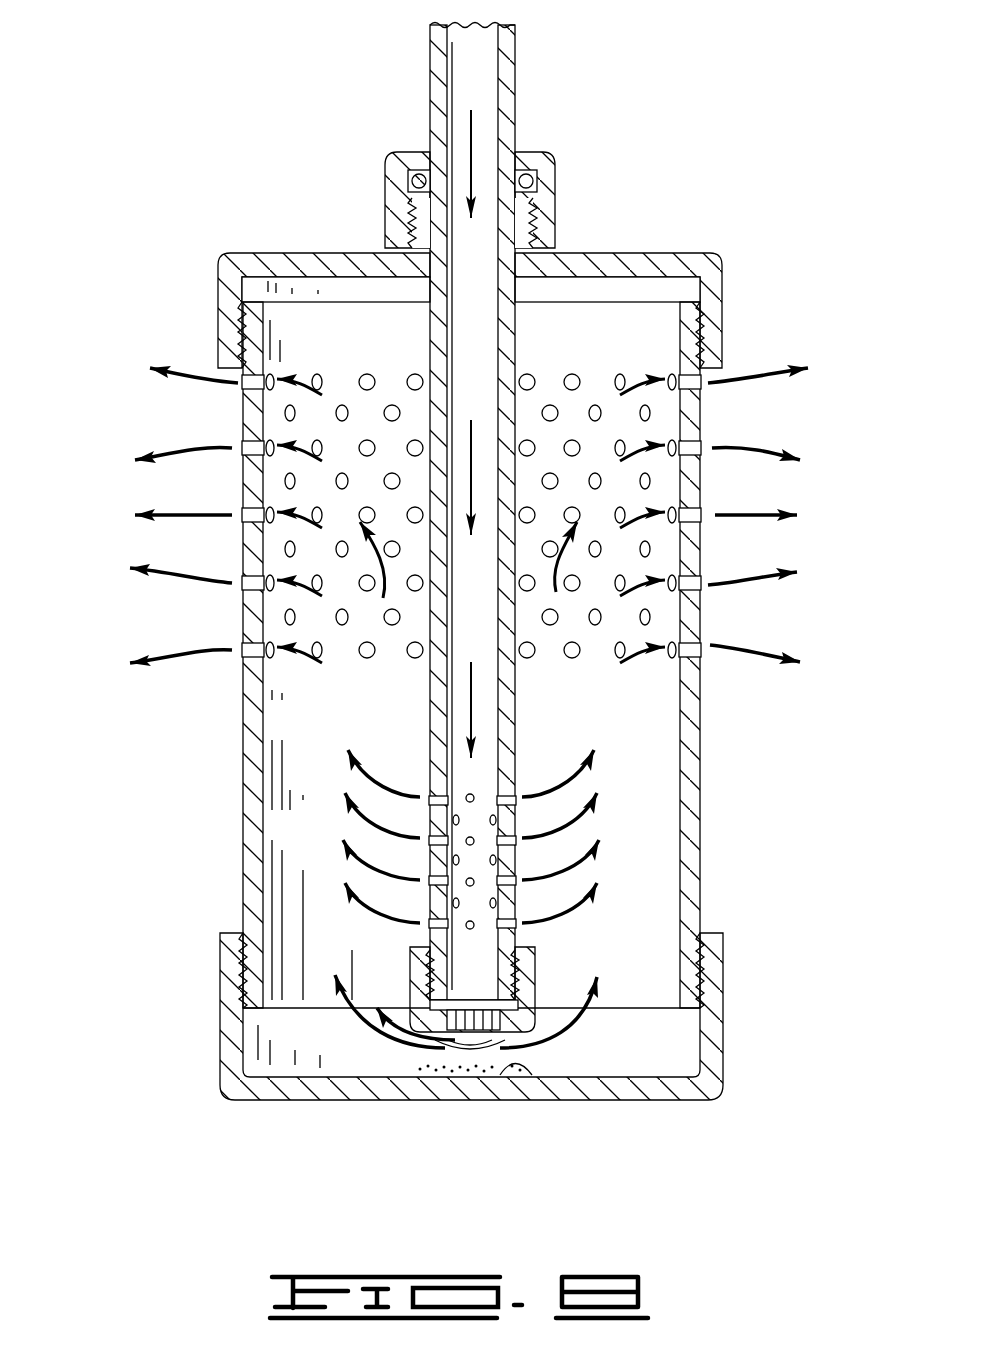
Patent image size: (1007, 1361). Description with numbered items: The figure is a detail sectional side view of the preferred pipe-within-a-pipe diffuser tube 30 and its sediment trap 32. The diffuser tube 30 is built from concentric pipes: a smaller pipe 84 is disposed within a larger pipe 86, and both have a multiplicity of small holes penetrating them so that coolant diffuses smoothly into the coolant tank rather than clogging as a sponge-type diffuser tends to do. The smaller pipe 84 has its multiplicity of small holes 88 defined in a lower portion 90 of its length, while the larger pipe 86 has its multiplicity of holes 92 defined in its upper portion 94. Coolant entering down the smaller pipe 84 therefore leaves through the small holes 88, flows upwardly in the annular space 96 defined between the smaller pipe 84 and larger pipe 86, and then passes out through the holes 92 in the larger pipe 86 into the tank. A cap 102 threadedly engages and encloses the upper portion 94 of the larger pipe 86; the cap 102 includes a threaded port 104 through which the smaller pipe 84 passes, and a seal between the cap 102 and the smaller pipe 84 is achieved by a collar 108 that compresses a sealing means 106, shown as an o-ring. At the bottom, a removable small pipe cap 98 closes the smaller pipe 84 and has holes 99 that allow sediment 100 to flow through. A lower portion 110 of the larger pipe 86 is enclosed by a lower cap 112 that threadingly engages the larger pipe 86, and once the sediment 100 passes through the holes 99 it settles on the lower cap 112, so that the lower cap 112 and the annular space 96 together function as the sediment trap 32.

The diffuser tube 30 is at (740, 622).
The sediment trap 32 is at (560, 1065).
The smaller pipe 84 is at (515, 712).
The larger pipe 86 is at (700, 773).
The small holes 88 is at (500, 855).
The lower portion 90 is at (430, 797).
The holes 92 is at (577, 378).
The upper portion 94 is at (703, 418).
The annular space 96 is at (303, 693).
The small pipe cap 98 is at (427, 1033).
The holes 99 is at (487, 1033).
The sediment 100 is at (520, 1062).
The cap 102 is at (696, 253).
The threaded port 104 is at (530, 217).
The sealing means 106 is at (535, 183).
The collar 108 is at (530, 150).
The lower portion 110 is at (700, 895).
The lower cap 112 is at (700, 1095).